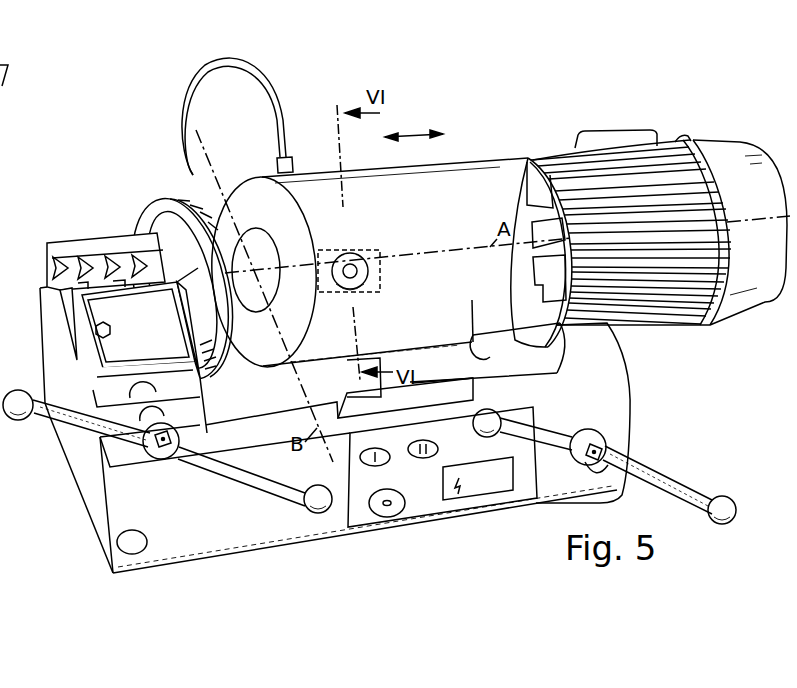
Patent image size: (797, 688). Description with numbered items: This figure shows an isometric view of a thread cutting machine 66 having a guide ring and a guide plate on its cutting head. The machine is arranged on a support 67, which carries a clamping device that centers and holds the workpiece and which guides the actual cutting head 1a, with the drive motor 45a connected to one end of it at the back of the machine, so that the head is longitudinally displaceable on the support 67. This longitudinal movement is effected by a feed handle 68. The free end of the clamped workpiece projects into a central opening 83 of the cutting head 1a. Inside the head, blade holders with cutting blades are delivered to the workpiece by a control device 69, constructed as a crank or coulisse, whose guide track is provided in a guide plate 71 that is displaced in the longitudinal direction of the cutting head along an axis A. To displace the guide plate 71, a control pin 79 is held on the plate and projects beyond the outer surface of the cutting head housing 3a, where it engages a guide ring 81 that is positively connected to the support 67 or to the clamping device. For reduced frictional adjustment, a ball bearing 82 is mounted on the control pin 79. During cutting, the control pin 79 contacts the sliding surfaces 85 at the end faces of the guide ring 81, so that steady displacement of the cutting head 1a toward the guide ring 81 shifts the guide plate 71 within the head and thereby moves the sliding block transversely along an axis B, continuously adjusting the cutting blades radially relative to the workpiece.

The cutting head housing 3a is at (73, 237).
The guide ring 81 is at (152, 205).
The central opening 83 is at (252, 247).
The cutting head 1a is at (357, 183).
The machine 66 is at (475, 152).
The drive motor 45a is at (723, 150).
The control device 69 is at (372, 236).
The ball bearing 82 is at (372, 256).
The control pin 79 is at (358, 272).
The guide plate 71 is at (380, 287).
The sliding surfaces 85 is at (220, 376).
The support 67 is at (228, 548).
The feed handle 68 is at (672, 485).